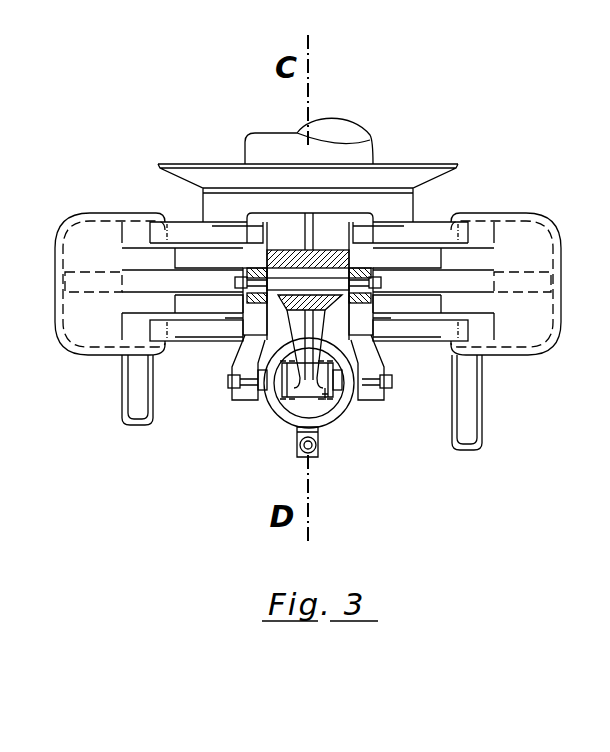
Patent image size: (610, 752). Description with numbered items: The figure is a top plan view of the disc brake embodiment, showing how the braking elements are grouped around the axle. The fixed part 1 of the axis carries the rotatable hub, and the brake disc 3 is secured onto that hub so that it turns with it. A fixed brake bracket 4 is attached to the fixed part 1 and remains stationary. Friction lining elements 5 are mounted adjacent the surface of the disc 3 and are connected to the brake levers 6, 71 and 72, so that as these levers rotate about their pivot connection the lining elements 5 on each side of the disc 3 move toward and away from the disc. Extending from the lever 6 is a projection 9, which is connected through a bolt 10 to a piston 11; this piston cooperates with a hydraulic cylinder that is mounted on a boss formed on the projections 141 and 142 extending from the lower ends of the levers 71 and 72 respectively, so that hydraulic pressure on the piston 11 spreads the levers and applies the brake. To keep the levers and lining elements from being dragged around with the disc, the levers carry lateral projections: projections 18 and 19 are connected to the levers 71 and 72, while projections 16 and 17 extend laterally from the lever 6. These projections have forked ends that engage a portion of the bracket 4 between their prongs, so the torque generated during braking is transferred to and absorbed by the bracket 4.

The fixed part of the axis 1 is at (462, 420).
The brake disc 3 is at (458, 280).
The fixed brake bracket 4 is at (88, 237).
The friction lining elements 5 is at (207, 262).
The brake lever 6 is at (328, 233).
The brake lever 71 is at (257, 326).
The brake lever 72 is at (340, 372).
The projection 9 is at (288, 405).
The bolt 10 is at (326, 395).
The piston 11 is at (322, 395).
The projection 141 is at (252, 382).
The projection 142 is at (372, 383).
The lateral projection 16 is at (157, 233).
The lateral projection 17 is at (458, 232).
The lateral projection 18 is at (157, 325).
The lateral projection 19 is at (547, 340).